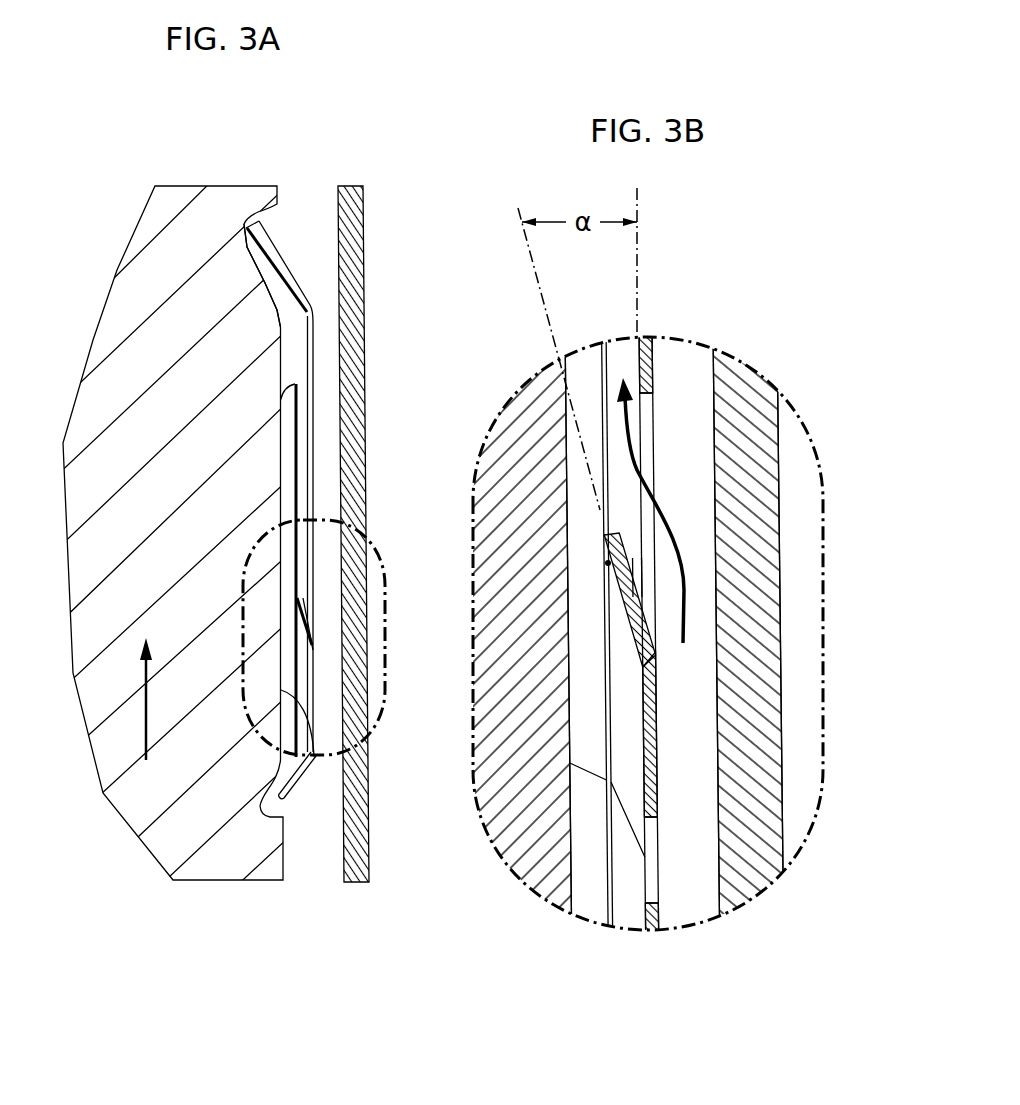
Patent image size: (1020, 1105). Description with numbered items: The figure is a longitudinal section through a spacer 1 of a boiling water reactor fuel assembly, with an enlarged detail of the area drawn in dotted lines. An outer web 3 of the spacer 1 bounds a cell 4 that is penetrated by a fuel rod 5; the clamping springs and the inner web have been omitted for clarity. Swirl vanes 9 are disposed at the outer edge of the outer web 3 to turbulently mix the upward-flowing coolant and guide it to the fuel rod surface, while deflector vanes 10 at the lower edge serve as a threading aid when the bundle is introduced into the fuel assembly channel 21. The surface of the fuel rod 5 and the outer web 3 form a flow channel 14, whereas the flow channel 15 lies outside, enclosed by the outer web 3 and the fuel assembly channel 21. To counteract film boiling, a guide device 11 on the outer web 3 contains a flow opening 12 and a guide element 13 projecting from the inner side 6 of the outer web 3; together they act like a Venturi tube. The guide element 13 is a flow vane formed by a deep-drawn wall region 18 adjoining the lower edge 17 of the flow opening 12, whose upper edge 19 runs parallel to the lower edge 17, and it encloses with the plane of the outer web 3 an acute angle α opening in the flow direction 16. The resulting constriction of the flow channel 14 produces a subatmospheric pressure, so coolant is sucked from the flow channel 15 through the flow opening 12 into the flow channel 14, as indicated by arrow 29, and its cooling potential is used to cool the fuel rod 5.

In FIG. 3A, the spacer 1 is at (297, 204).
In FIG. 3A, the outer web 3 is at (313, 345).
In FIG. 3B, the outer web 3 is at (656, 787).
In FIG. 3A, the cell 4 is at (290, 325).
In FIG. 3A, the fuel rod 5 is at (213, 217).
In FIG. 3B, the fuel rod 5 is at (533, 842).
In FIG. 3A, the inner side 6 is at (303, 443).
In FIG. 3B, the inner side 6 is at (638, 372).
In FIG. 3A, the swirl vane 9 is at (282, 231).
In FIG. 3A, the deflector vane 10 is at (299, 787).
In FIG. 3A, the guide device 11 is at (333, 589).
In FIG. 3B, the guide device 11 is at (621, 507).
In FIG. 3B, the flow opening 12 is at (652, 460).
In FIG. 3A, the guide element 13 is at (322, 625).
In FIG. 3B, the guide element 13 is at (608, 563).
In FIG. 3A, the flow channel 14 is at (297, 737).
In FIG. 3B, the flow channel 14 is at (607, 888).
In FIG. 3A, the flow channel 15 is at (328, 383).
In FIG. 3B, the flow channel 15 is at (687, 487).
In FIG. 3A, the flow direction 16 is at (146, 708).
In FIG. 3B, the lower edge 17 is at (603, 515).
In FIG. 3B, the deep-drawn wall region 18 is at (608, 563).
In FIG. 3B, the upper edge 19 is at (655, 416).
In FIG. 3A, the fuel assembly channel 21 is at (358, 860).
In FIG. 3B, the fuel assembly channel 21 is at (748, 867).
In FIG. 3B, the arrow 29 is at (672, 545).